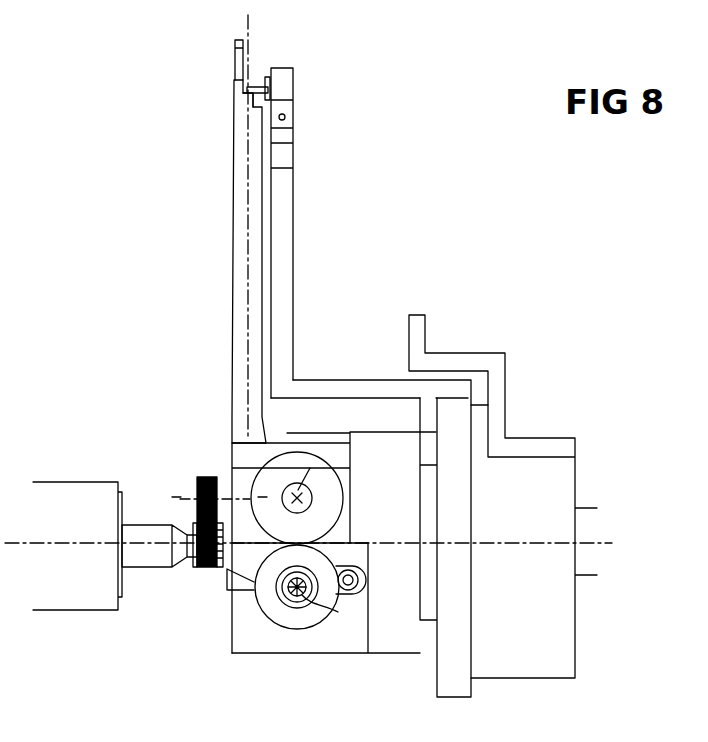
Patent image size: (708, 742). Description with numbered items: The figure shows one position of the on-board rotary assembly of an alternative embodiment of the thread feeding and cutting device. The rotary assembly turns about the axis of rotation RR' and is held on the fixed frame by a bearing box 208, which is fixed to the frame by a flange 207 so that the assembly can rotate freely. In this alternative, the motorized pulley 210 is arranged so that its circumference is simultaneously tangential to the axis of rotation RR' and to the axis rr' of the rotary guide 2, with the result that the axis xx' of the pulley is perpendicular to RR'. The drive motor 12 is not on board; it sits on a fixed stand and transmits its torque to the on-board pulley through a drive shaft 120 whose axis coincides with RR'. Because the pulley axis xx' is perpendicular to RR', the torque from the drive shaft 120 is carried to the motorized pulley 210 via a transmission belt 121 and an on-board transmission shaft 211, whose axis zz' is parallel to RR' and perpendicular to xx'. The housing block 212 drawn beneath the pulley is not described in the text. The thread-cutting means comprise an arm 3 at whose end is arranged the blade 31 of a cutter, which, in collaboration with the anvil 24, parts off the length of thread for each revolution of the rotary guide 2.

The rotary guide 2 is at (243, 223).
The anvil 24 is at (233, 62).
The blade 31 is at (253, 86).
The arm 3 is at (284, 244).
The motorized pulley 210 is at (270, 478).
The lower housing block 212 is at (282, 615).
The flange 207 is at (451, 665).
The bearing box 208 is at (557, 638).
The drive motor 12 is at (90, 582).
The drive shaft 120 is at (180, 563).
The on-board transmission shaft 211 is at (197, 493).
The transmission belt 121 is at (193, 523).